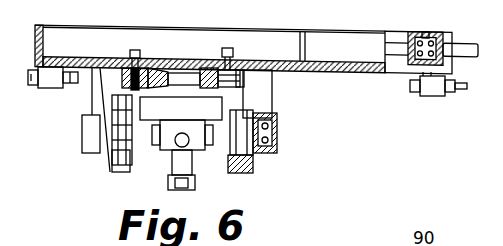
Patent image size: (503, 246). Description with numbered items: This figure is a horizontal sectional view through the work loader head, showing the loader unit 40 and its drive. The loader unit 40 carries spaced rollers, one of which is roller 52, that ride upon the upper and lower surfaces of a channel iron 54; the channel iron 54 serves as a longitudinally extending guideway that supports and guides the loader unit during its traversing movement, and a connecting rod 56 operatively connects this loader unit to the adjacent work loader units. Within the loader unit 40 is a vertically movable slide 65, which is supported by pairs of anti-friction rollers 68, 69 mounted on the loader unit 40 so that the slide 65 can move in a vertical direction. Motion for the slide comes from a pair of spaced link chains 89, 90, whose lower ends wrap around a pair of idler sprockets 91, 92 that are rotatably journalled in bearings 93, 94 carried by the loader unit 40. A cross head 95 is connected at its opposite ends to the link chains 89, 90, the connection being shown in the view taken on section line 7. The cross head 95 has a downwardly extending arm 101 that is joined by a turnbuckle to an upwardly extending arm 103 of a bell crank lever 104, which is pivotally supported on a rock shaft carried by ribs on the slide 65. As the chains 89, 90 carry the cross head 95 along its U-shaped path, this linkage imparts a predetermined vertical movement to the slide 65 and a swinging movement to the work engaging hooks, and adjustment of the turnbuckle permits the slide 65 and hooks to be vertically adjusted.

The loader unit 40 is at (296, 25).
The roller 52 is at (438, 32).
The channel iron 54 is at (463, 45).
The connecting rod 56 is at (467, 84).
The vertically movable slide 65 is at (222, 72).
The anti-friction roller 68 is at (118, 78).
The anti-friction roller 69 is at (240, 75).
The section line 7- 7 is at (175, 90).
The link chain 89 is at (136, 162).
The link chain 90 is at (225, 160).
The idler sprocket 91 is at (125, 127).
The idler sprocket 92 is at (265, 113).
The bearing 93 is at (100, 143).
The bearing 94 is at (258, 148).
The cross head 95 is at (194, 166).
The downwardly extending arm 101 is at (180, 122).
The upwardly extending arm 103 is at (180, 155).
The bell crank lever 104 is at (193, 187).